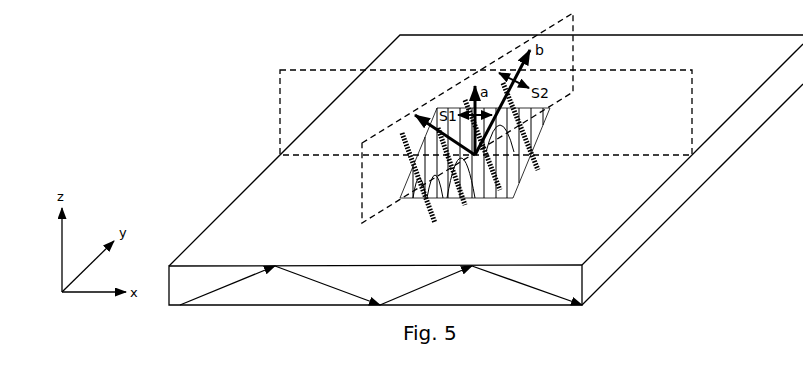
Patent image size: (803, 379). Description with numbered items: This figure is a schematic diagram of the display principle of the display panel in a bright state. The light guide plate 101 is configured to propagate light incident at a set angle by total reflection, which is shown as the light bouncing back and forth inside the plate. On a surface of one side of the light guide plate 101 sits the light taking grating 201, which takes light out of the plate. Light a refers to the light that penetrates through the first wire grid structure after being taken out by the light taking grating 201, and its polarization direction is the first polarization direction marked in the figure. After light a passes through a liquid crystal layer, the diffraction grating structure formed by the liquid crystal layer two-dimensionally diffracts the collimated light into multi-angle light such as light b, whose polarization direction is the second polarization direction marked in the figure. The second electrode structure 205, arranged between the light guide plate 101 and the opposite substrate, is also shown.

The light guide plate 101 is at (598, 270).
The light taking grating 201 is at (548, 125).
The second electrode structure 205 is at (530, 171).